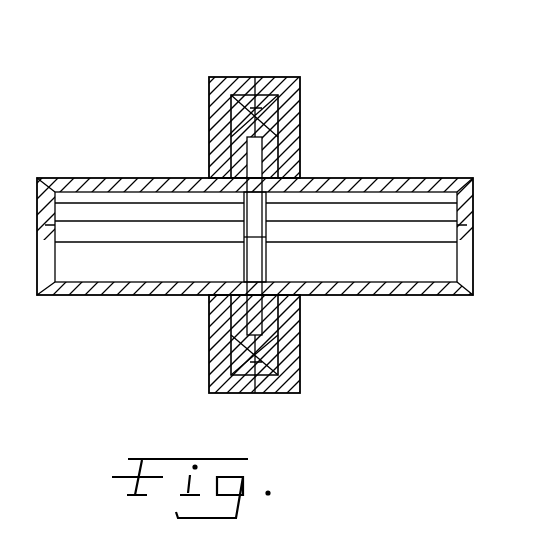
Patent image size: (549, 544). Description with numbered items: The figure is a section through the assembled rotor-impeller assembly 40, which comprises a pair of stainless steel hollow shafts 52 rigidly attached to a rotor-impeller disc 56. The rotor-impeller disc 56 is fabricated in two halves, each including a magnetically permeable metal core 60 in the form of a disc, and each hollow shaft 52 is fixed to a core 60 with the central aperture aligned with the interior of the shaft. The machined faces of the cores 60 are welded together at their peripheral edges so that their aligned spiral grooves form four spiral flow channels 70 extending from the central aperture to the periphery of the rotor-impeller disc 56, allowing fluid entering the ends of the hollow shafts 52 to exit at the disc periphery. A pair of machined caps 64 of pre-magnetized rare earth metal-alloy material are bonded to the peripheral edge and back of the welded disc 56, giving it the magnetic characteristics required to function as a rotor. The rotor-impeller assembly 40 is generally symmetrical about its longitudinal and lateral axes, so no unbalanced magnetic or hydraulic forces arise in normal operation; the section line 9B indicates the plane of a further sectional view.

The rotor-impeller assembly 40 is at (412, 115).
The hollow shaft 52 is at (128, 178).
The rotor-impeller disc 56 is at (209, 122).
The machined cap 64 is at (282, 104).
The magnetically permeable metal core 60 is at (235, 318).
The spiral flow channel 70 is at (262, 152).
The section view 9B is at (229, 88).